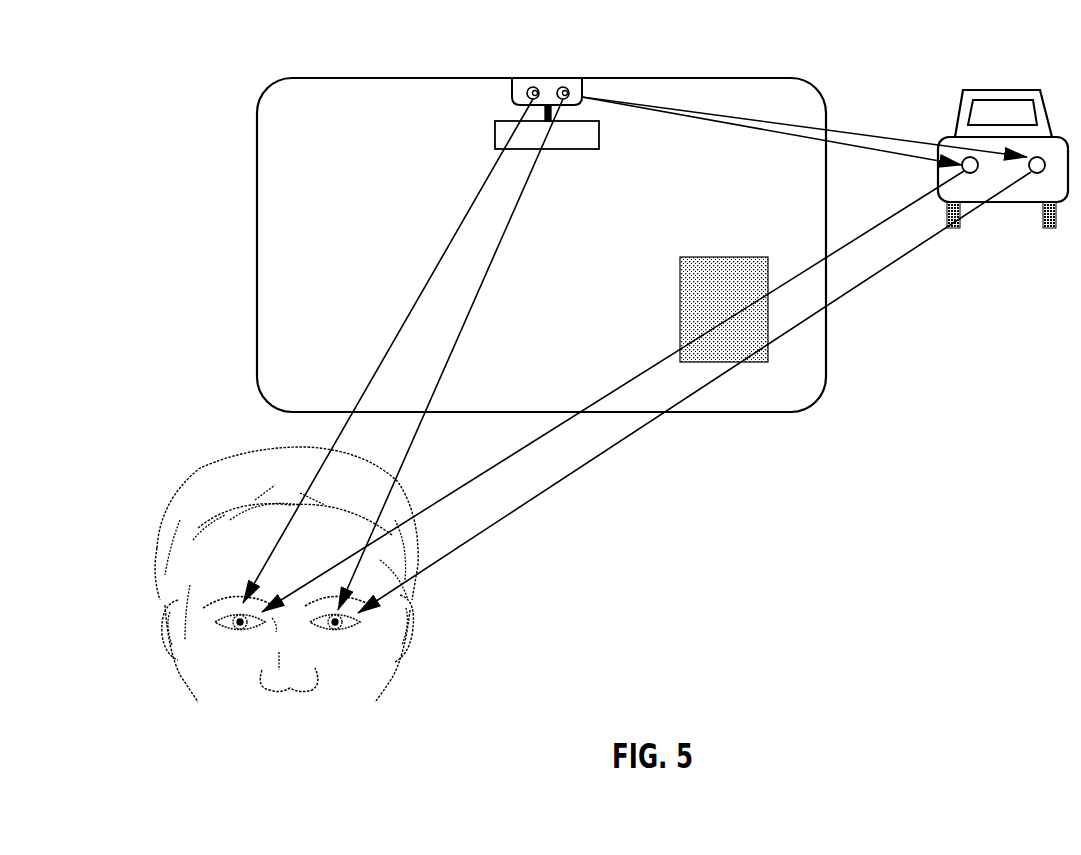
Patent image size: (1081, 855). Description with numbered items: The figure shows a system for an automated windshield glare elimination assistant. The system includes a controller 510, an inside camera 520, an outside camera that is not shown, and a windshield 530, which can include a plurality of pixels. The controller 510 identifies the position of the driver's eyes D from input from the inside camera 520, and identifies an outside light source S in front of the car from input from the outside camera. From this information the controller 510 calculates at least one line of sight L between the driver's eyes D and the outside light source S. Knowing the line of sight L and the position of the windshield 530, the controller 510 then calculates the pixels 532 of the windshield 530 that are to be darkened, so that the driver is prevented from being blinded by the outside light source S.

The windshield 530 is at (342, 78).
The controller 510 is at (512, 88).
The inside camera 520 is at (566, 88).
The pixels 532 is at (722, 257).
The outside light source S is at (997, 88).
The driver's eyes D is at (232, 458).
The line of sight L is at (518, 453).